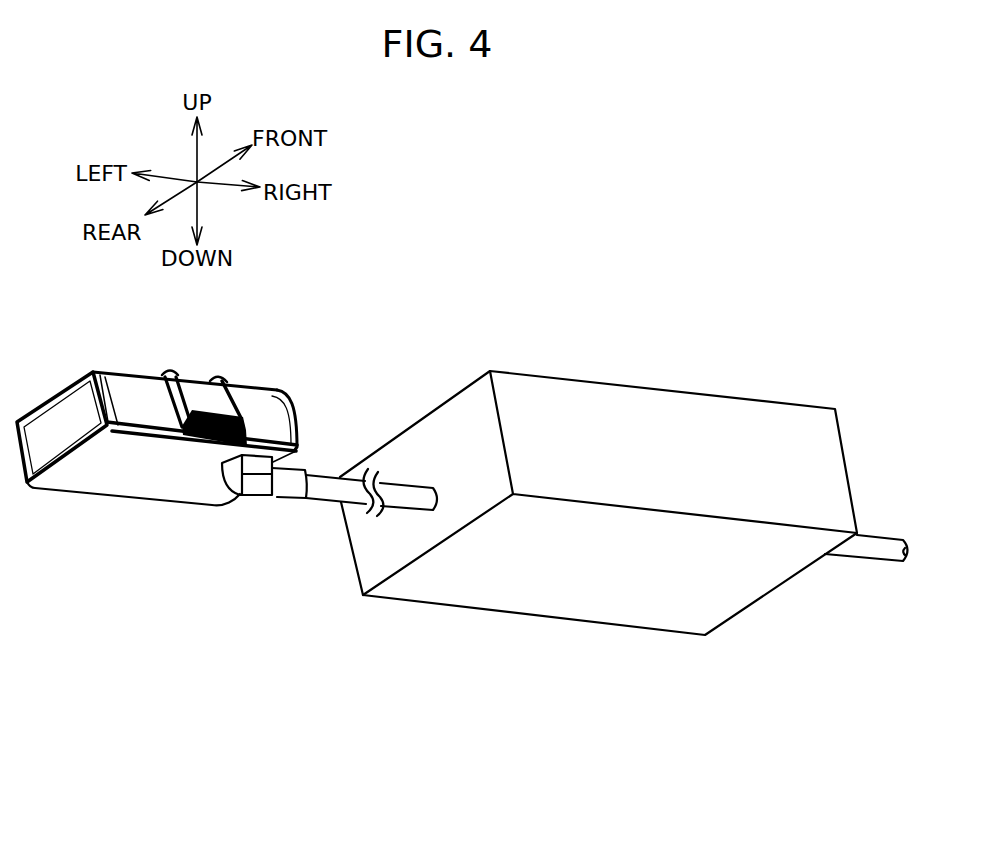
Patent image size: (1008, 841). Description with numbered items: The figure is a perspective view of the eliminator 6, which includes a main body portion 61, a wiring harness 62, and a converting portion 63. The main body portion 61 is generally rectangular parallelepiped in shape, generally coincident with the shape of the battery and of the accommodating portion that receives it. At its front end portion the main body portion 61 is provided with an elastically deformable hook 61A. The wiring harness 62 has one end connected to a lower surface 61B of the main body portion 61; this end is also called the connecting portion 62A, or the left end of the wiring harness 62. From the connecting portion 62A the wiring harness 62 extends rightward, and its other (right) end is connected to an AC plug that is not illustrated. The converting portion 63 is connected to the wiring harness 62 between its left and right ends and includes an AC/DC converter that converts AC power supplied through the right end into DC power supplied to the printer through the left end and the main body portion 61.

The eliminator 6 is at (397, 697).
The main body portion 61 is at (157, 449).
The hook 61A is at (202, 395).
The lower surface 61B is at (121, 478).
The wiring harness 62 is at (327, 487).
The connecting portion 62A is at (257, 488).
The converting portion 63 is at (600, 575).